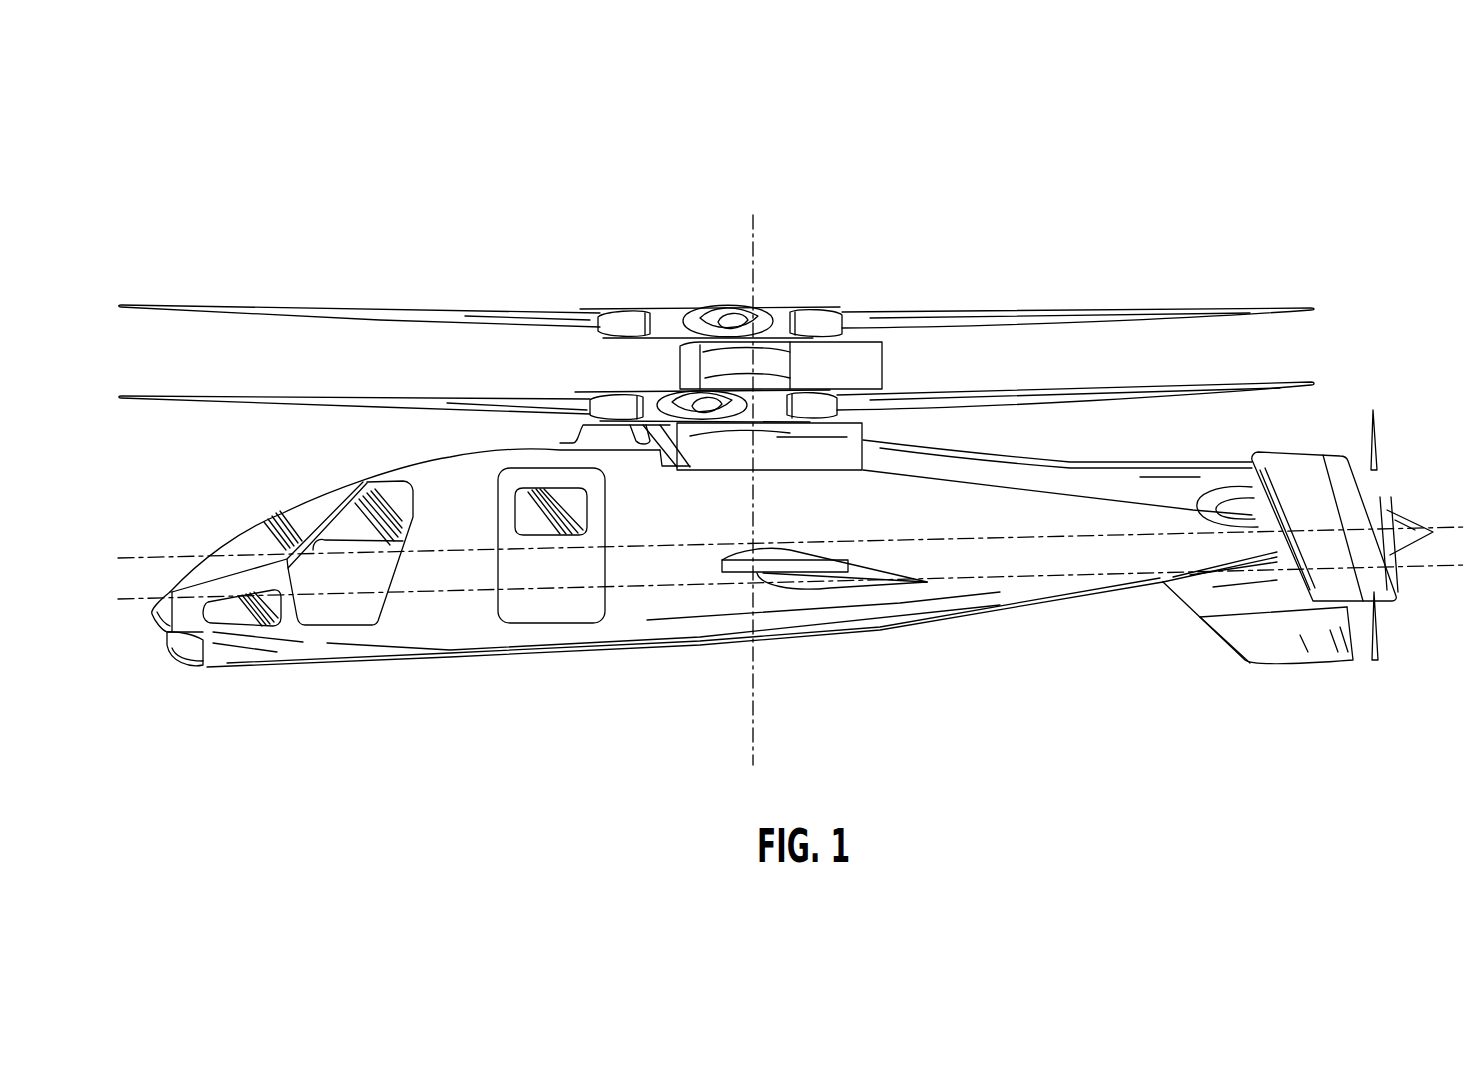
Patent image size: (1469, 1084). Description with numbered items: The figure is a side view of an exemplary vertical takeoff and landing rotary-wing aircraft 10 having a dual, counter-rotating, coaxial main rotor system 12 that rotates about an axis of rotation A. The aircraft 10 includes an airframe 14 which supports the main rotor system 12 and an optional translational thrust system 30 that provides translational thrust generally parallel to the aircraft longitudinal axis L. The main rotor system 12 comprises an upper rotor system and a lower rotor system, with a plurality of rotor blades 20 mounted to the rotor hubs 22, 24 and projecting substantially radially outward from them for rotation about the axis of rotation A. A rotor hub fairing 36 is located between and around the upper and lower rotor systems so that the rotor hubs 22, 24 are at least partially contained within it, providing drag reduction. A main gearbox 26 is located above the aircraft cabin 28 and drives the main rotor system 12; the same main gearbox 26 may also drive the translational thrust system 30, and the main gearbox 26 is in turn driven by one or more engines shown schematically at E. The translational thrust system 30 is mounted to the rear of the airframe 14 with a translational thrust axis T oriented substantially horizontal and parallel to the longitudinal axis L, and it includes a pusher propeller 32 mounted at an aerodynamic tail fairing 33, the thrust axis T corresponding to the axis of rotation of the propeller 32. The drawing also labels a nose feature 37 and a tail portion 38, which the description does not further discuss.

The rotary-wing aircraft 10 is at (934, 185).
The main rotor system 12 is at (835, 270).
The airframe 14 is at (367, 472).
The rotor blades 20 is at (1097, 389).
The rotor hub 22 is at (688, 300).
The rotor hub 24 is at (678, 392).
The main gearbox 26 is at (726, 452).
The aircraft cabin 28 is at (455, 630).
The translational thrust system 30 is at (1362, 408).
The pusher propeller 32 is at (1380, 618).
The aerodynamic tail fairing 33 is at (1255, 645).
The rotor hub fairing 36 is at (882, 345).
The nose landing light housing 37 is at (202, 627).
The tail section / extending tail 38 is at (1152, 558).
The engines E is at (875, 455).
The translational thrust axis T is at (782, 550).
The aircraft longitudinal axis L is at (782, 591).
The axis of rotation A is at (753, 504).